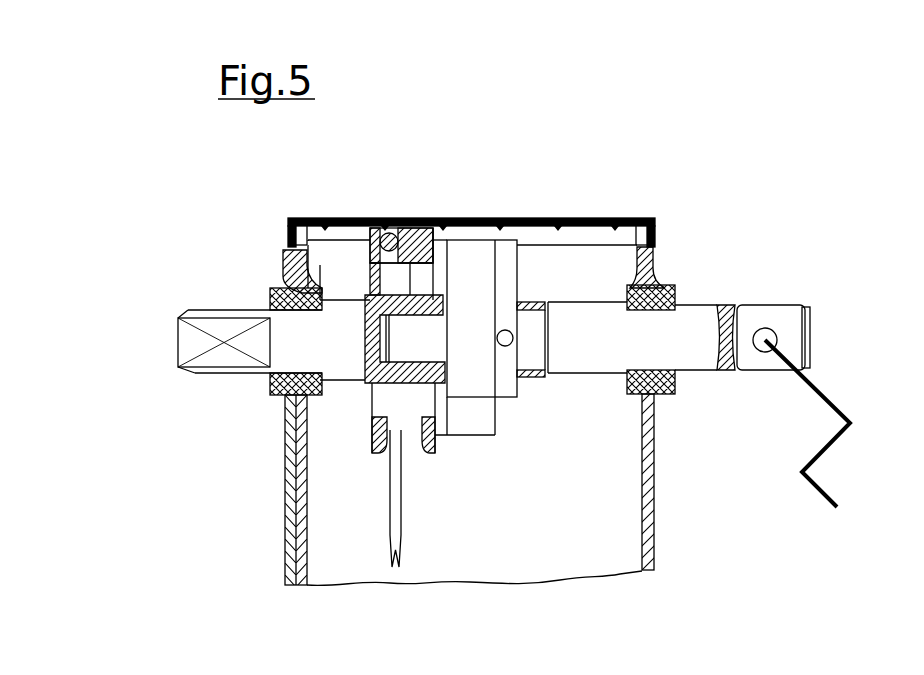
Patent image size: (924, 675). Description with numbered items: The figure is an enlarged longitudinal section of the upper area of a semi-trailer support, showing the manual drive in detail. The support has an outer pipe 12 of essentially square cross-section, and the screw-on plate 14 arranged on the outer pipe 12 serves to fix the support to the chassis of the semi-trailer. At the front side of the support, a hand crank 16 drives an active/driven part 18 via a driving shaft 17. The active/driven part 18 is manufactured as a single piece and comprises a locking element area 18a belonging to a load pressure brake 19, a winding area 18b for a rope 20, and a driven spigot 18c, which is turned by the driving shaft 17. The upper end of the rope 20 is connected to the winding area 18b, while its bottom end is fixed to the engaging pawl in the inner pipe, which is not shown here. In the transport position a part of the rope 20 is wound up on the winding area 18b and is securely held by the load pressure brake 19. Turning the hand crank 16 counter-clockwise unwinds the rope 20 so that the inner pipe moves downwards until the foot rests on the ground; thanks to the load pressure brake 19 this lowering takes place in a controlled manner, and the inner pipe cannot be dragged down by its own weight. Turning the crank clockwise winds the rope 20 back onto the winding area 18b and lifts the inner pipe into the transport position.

The outer pipe 12 is at (648, 535).
The screw-on plate 14 is at (284, 463).
The hand crank 16 is at (818, 385).
The driving shaft 17 is at (680, 323).
The active/driven part 18 is at (356, 276).
The locking element area 18a is at (438, 295).
The winding area 18b is at (408, 243).
The driven spigot 18c is at (232, 337).
The load pressure brake 19 is at (475, 272).
The rope 20 is at (386, 532).